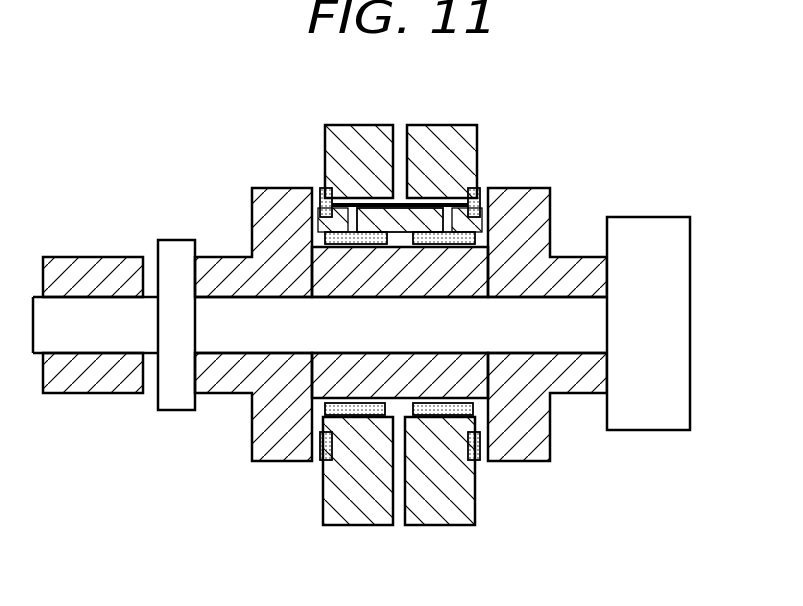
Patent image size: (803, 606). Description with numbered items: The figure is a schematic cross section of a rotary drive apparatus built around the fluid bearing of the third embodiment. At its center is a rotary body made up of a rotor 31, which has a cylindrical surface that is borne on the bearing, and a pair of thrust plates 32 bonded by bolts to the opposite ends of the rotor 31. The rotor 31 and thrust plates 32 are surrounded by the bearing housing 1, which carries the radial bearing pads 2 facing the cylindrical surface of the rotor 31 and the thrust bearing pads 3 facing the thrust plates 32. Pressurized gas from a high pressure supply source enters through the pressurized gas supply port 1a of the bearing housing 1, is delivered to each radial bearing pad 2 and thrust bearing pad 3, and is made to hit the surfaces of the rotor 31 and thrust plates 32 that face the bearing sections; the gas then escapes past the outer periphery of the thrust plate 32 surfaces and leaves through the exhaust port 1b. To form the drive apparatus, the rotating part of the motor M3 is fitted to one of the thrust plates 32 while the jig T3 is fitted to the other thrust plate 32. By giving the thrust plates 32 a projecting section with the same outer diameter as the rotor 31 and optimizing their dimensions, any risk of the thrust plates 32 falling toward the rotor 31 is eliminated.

The bearing housing 1 is at (450, 132).
The pressurized gas supply port 1a is at (400, 130).
The exhaust port 1b is at (398, 520).
The radial bearing pad 2 is at (340, 418).
The thrust bearing pad 3 is at (320, 446).
The rotor 31 is at (347, 277).
The thrust plate 32 is at (233, 270).
The motor M3 is at (680, 268).
The jig T3 is at (69, 396).